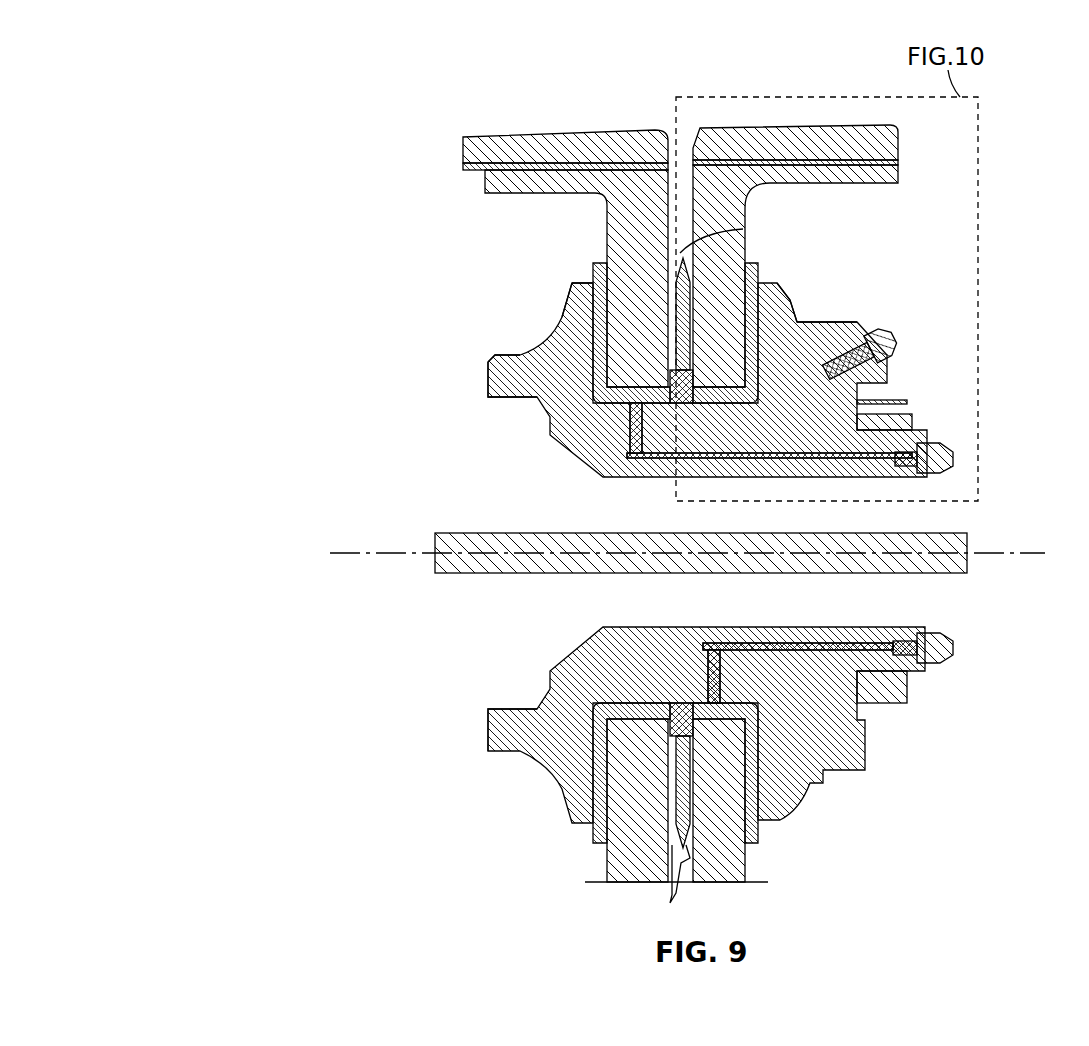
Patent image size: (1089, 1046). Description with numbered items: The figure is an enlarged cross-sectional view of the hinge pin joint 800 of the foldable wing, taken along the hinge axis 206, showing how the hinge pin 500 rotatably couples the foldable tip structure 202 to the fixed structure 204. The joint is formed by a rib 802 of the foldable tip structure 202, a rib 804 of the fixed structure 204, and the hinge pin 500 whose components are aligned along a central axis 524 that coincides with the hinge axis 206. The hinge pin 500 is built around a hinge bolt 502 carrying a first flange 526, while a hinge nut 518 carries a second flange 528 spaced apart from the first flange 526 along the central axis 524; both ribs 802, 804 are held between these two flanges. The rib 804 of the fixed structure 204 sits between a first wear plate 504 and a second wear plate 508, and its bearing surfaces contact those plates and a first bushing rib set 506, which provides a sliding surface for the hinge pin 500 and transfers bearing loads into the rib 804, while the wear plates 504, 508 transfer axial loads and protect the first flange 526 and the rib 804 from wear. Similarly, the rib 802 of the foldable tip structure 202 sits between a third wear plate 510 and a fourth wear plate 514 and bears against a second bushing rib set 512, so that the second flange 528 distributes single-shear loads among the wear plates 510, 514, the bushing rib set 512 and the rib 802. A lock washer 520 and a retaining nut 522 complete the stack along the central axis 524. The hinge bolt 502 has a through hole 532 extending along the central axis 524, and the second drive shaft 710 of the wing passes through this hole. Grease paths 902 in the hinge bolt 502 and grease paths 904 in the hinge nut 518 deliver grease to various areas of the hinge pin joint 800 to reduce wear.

The hinge pin joint 800 is at (203, 83).
The foldable tip structure 202 is at (883, 125).
The fixed structure 204 is at (507, 136).
The hinge axis 206 is at (380, 553).
The hinge pin 500 is at (578, 428).
The hinge bolt 502 is at (523, 372).
The first wear plate 504 is at (593, 303).
The first bushing rib set 506 is at (570, 722).
The second wear plate 508 is at (678, 272).
The third wear plate 510 is at (743, 229).
The second bushing rib set 512 is at (745, 700).
The fourth wear plate 514 is at (758, 265).
The hinge nut 518 is at (795, 322).
The lock washer 520 is at (883, 397).
The retaining nut 522 is at (912, 422).
The central axis 524 is at (348, 553).
The first flange 526 is at (575, 333).
The second flange 528 is at (780, 283).
The through hole 532 is at (865, 605).
The second drive shaft 710 is at (945, 565).
The rib 802 is at (733, 207).
The rib 804 is at (643, 220).
The grease path 902 is at (890, 460).
The grease path 904 is at (827, 347).